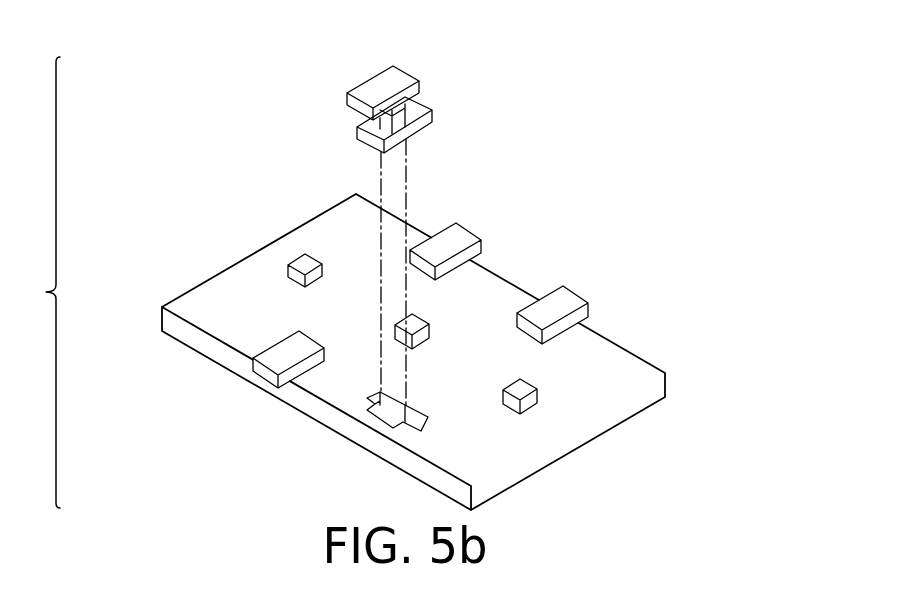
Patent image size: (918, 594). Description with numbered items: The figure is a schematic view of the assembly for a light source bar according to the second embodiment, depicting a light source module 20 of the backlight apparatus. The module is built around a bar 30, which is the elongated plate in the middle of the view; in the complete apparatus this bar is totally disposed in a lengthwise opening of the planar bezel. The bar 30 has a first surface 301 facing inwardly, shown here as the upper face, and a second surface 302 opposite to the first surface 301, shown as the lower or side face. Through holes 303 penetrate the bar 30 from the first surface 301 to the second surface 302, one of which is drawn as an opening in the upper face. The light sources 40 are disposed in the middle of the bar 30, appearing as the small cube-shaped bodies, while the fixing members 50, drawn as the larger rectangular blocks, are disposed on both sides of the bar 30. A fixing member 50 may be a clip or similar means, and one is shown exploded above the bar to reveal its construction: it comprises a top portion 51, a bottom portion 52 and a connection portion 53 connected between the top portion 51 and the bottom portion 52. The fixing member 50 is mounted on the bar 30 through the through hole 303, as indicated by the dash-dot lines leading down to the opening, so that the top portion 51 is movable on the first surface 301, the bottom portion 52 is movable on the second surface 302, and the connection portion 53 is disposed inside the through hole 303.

The light source module 20 is at (46, 292).
The bar 30 is at (603, 420).
The first surface 301 is at (213, 297).
The second surface 302 is at (317, 422).
The through hole 303 is at (420, 423).
The light source 40 is at (302, 260).
The fixing member 50 is at (552, 305).
The top portion 51 is at (392, 83).
The bottom portion 52 is at (420, 104).
The connection portion 53 is at (428, 133).